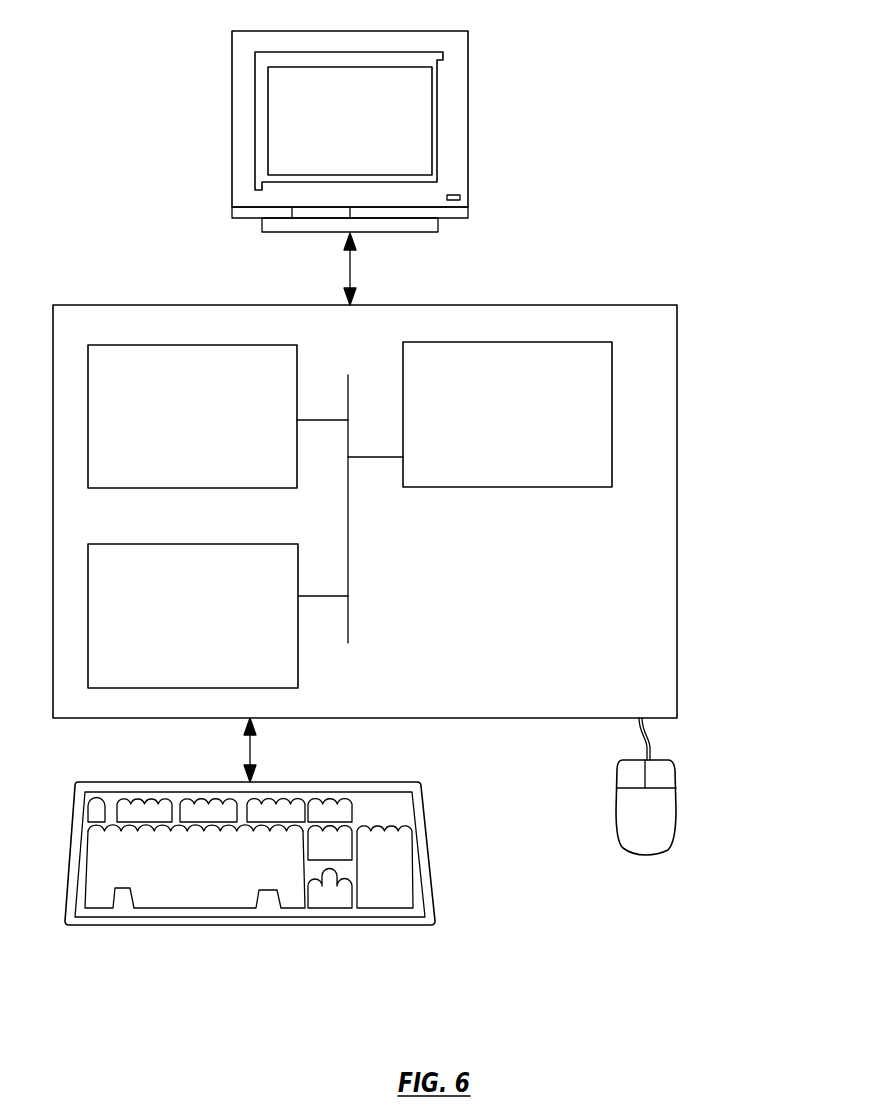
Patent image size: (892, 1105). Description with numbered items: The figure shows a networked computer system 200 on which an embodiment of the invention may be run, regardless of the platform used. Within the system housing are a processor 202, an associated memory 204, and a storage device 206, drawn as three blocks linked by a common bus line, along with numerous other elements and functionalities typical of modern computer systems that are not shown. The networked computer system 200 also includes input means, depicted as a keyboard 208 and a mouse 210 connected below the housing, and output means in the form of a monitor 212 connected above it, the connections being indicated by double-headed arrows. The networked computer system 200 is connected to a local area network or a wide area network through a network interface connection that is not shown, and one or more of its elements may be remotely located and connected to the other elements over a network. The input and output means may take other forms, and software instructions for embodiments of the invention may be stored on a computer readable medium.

The networked computer system 200 is at (694, 167).
The processor 202 is at (508, 426).
The memory 204 is at (173, 429).
The storage device 206 is at (172, 629).
The keyboard 208 is at (167, 891).
The mouse 210 is at (625, 829).
The monitor 212 is at (328, 137).